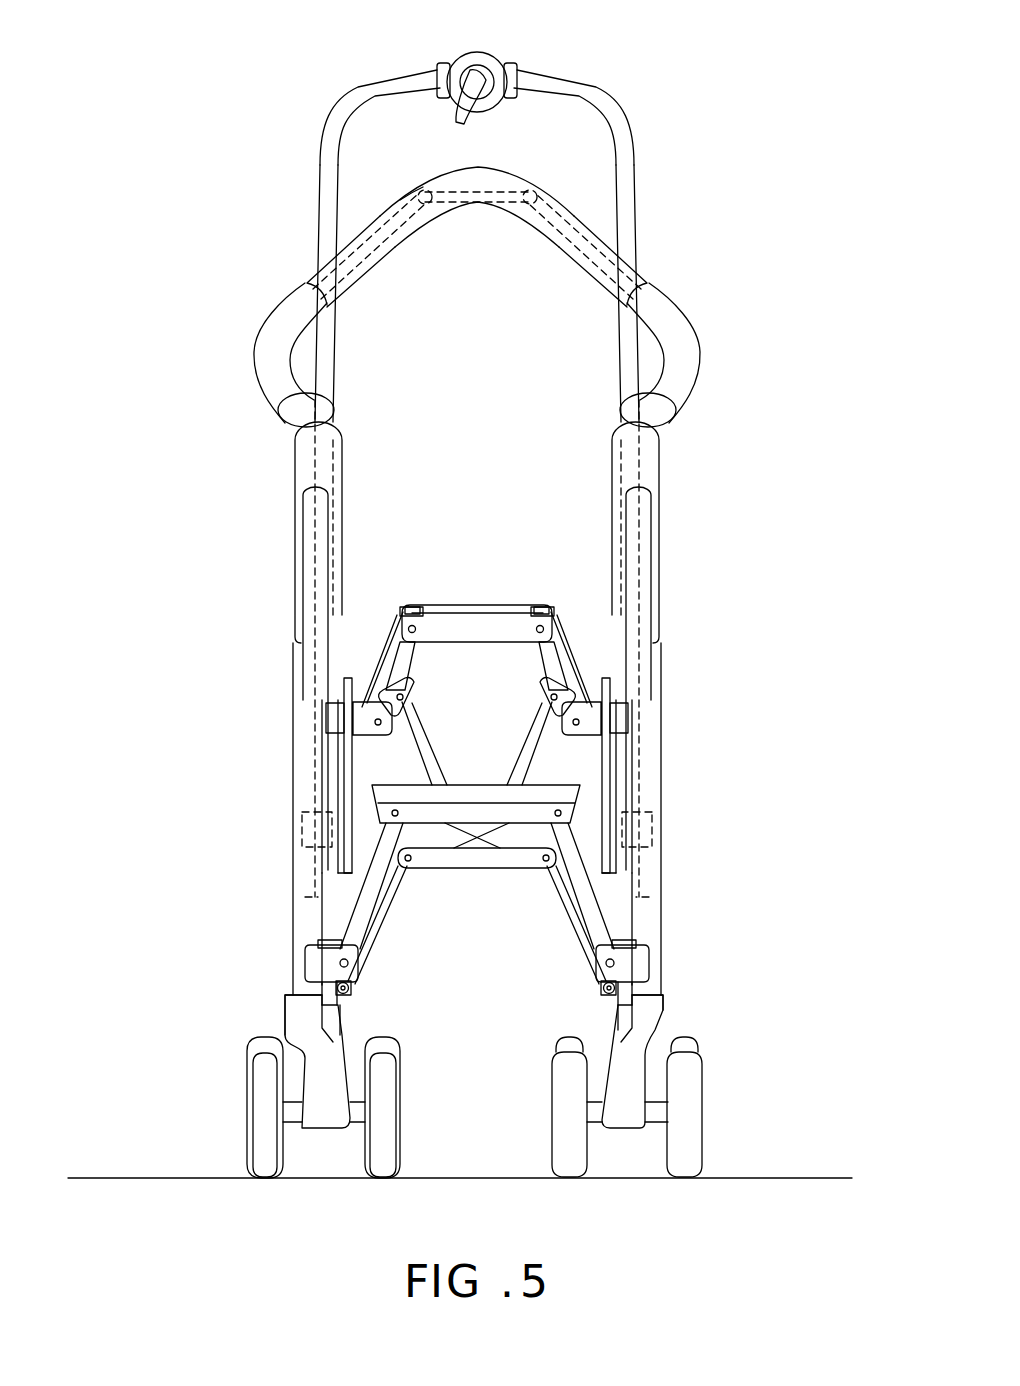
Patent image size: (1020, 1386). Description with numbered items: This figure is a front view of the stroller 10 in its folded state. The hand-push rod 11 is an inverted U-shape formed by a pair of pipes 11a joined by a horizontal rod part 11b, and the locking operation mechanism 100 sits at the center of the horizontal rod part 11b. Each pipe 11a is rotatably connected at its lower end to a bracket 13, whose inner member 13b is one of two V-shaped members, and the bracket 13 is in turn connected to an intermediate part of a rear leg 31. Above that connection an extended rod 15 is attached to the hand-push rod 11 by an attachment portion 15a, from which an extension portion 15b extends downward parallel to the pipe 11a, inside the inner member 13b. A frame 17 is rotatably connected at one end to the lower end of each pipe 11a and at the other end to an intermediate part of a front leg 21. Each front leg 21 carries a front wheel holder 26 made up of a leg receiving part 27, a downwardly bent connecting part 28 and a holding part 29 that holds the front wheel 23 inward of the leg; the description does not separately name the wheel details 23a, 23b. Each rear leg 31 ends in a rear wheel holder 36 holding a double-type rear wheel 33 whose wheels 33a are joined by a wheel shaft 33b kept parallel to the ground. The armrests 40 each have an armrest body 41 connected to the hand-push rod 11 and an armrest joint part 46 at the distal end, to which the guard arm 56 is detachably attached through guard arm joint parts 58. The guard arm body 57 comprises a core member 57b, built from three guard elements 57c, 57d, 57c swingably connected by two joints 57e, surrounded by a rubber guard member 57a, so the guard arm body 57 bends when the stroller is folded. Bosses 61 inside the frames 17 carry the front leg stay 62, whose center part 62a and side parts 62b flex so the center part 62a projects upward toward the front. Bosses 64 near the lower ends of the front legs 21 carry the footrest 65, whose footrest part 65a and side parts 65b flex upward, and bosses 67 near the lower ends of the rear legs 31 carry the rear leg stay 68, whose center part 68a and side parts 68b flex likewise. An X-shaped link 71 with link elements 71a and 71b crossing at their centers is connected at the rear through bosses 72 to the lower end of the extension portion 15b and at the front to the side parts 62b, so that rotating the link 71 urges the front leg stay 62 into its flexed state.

The stroller 10 is at (336, 78).
The locking operation mechanism 100 is at (492, 52).
The hand-push rod 11 is at (642, 188).
The pipe 11a is at (330, 208).
The horizontal rod part 11b is at (592, 104).
The bracket 13 is at (323, 872).
The inner member 13b is at (630, 872).
The extended rod 15 is at (322, 930).
The attachment portion 15a is at (320, 826).
The extension portion 15b is at (632, 930).
The frame 17 is at (350, 700).
The front leg 21 is at (305, 572).
The front wheel 23 is at (258, 1160).
The wheel 23a is at (387, 1117).
The wheel axle end 23b is at (354, 1128).
The front wheel holder 26 is at (284, 1003).
The leg receiving part 27 is at (300, 1028).
The connecting part 28 is at (320, 1048).
The holding part 29 is at (322, 1128).
The rear leg 31 is at (340, 742).
The rear wheel 33 is at (246, 1045).
The wheel 33a is at (392, 1043).
The wheel shaft 33b is at (290, 1107).
The rear wheel holder 36 is at (337, 1010).
The armrest 40 is at (292, 452).
The armrest body 41 is at (300, 470).
The armrest joint part 46 is at (290, 413).
The guard arm 56 is at (402, 197).
The guard arm body 57 is at (578, 228).
The guard member 57a is at (348, 282).
The core member 57b is at (382, 303).
The outside guard element 57c is at (380, 243).
The guard element 57d is at (470, 207).
The joint 57e is at (424, 190).
The guard arm joint part 58 is at (277, 317).
The boss 61 is at (365, 696).
The front leg stay 62 is at (385, 532).
The center part 62a is at (478, 626).
The side part 62b is at (398, 610).
The boss 64 is at (305, 963).
The footrest 65 is at (460, 785).
The footrest part 65a is at (490, 785).
The side part 65b is at (368, 785).
The boss 67 is at (320, 944).
The rear leg stay 68 is at (385, 952).
The center part 68a is at (476, 870).
The side part 68b is at (390, 888).
The X-shaped link 71 is at (420, 690).
The link element 71a is at (533, 727).
The link element 71b is at (417, 727).
The boss 72 is at (350, 989).